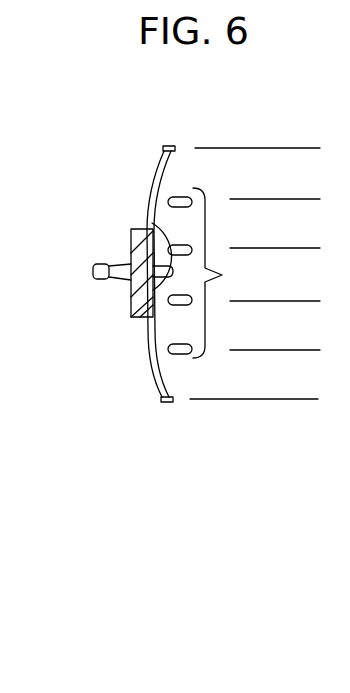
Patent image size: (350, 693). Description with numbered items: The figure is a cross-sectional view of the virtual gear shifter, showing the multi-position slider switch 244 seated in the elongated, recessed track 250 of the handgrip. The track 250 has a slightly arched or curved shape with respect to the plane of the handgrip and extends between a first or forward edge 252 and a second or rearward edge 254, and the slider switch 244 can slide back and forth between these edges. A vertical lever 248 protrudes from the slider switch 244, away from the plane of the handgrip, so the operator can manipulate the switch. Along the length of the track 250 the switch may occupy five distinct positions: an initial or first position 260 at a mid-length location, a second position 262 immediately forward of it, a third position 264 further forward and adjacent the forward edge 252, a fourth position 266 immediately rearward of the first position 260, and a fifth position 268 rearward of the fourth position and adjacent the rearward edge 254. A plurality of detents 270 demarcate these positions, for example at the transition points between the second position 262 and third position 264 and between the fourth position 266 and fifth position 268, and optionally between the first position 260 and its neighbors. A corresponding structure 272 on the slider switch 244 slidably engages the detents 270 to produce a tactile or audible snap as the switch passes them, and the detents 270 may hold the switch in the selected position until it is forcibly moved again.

The forward edge 252 is at (163, 148).
The rearward edge 254 is at (162, 400).
The track 250 is at (150, 331).
The slider switch 244 is at (130, 301).
The vertical lever 248 is at (93, 268).
The corresponding structure 272 is at (152, 224).
The detents 270 is at (216, 273).
The third position 264 is at (257, 173).
The second position 262 is at (275, 232).
The first position 260 is at (275, 282).
The fourth position 266 is at (275, 331).
The fifth position 268 is at (254, 382).